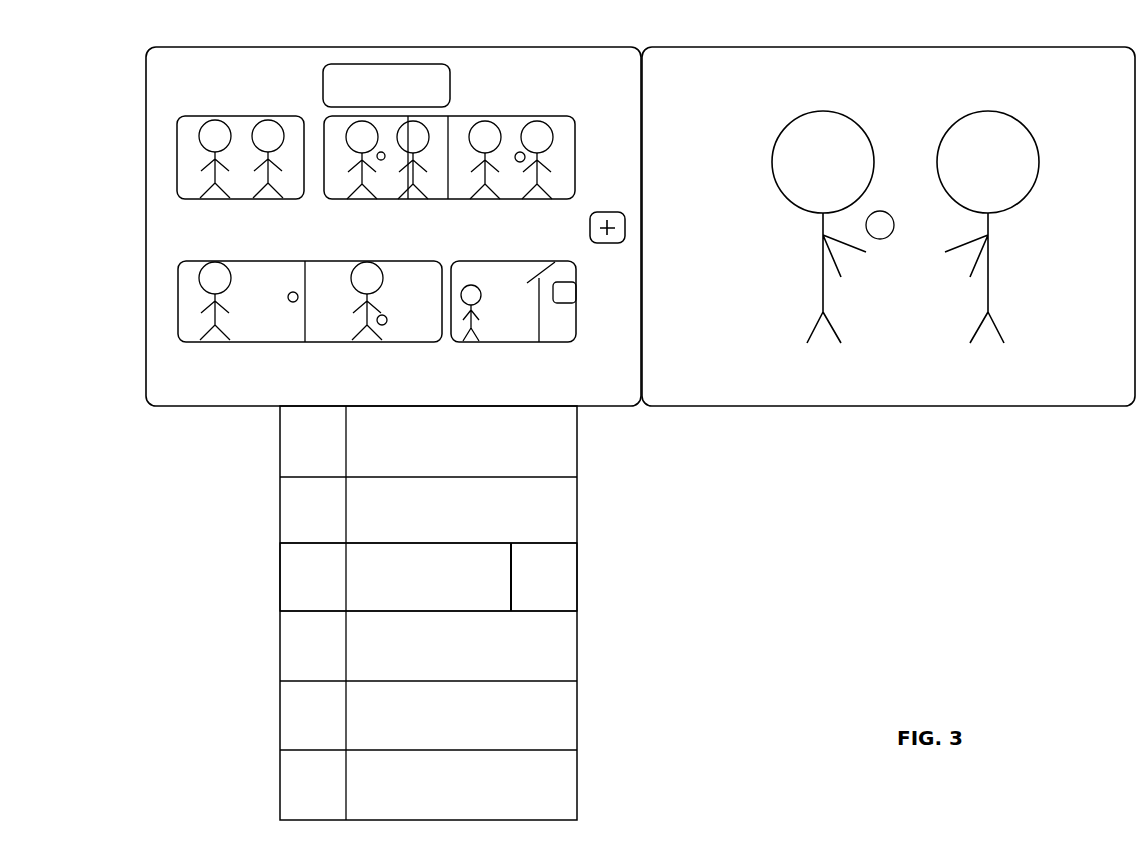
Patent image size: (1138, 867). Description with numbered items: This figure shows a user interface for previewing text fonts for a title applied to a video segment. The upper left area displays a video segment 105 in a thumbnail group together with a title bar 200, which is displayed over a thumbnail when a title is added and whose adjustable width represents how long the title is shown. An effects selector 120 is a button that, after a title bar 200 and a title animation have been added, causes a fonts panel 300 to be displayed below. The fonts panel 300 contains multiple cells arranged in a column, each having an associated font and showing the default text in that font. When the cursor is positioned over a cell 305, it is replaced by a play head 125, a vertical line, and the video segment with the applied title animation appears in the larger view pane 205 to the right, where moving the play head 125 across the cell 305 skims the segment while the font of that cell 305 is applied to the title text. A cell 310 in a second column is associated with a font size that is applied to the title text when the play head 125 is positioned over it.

The title bar 200 is at (323, 82).
The video segment 105 is at (146, 163).
The effects selector 120 is at (590, 232).
The view pane 205 is at (852, 406).
The fonts panel 300 is at (430, 613).
The cell 305 is at (577, 575).
The cell in second column 310 is at (280, 575).
The play head 125 is at (511, 575).